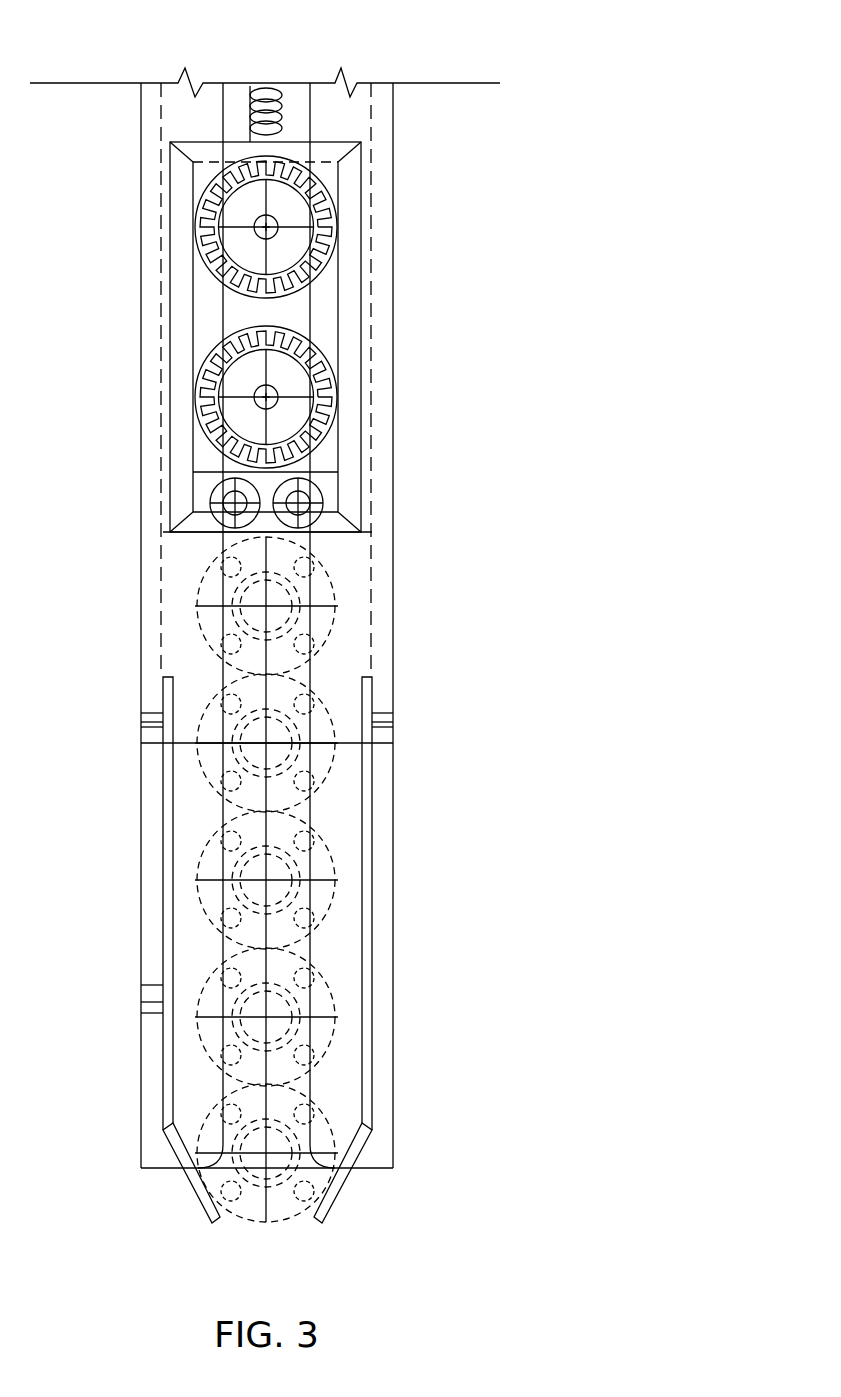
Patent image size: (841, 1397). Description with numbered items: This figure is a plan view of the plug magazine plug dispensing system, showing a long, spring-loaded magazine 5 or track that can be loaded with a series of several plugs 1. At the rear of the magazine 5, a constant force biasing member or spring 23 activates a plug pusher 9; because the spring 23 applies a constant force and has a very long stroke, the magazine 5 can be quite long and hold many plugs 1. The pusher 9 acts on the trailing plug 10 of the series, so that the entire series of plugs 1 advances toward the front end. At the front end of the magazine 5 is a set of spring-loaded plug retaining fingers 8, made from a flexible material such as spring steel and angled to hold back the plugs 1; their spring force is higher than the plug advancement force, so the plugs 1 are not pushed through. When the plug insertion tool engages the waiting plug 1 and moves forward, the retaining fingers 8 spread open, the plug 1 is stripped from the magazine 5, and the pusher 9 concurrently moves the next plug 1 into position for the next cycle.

The constant force biasing member or spring 23 is at (272, 86).
The plug pusher 9 is at (362, 367).
The trailing plug 10 is at (333, 593).
The magazine 5 is at (393, 910).
The plug 1 is at (333, 1125).
The spring-loaded plug retaining fingers 8 is at (192, 1193).